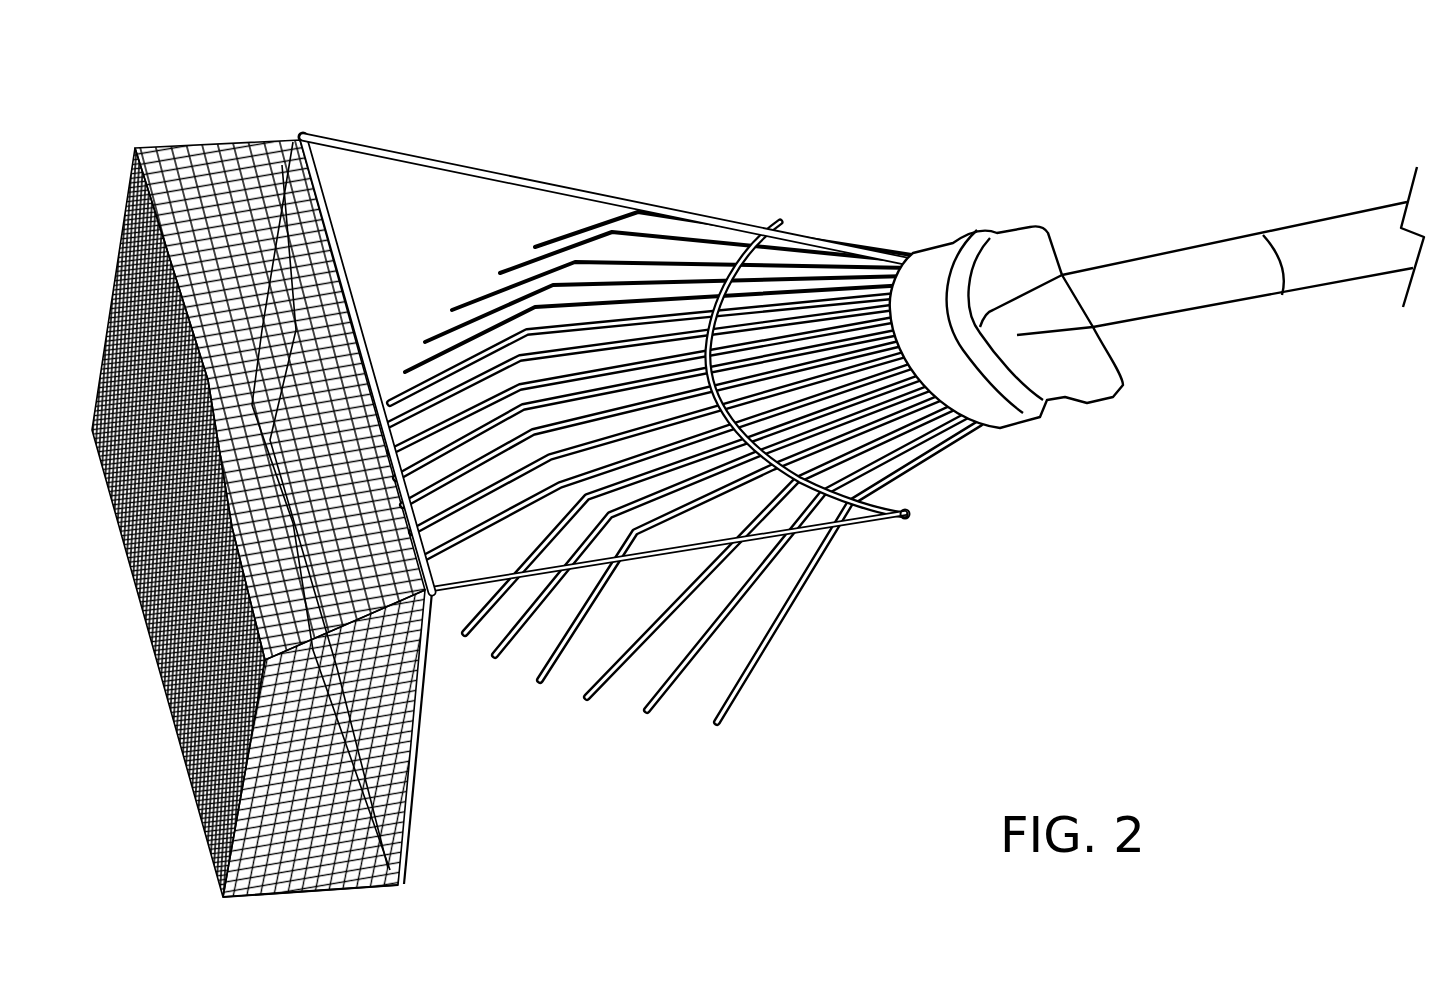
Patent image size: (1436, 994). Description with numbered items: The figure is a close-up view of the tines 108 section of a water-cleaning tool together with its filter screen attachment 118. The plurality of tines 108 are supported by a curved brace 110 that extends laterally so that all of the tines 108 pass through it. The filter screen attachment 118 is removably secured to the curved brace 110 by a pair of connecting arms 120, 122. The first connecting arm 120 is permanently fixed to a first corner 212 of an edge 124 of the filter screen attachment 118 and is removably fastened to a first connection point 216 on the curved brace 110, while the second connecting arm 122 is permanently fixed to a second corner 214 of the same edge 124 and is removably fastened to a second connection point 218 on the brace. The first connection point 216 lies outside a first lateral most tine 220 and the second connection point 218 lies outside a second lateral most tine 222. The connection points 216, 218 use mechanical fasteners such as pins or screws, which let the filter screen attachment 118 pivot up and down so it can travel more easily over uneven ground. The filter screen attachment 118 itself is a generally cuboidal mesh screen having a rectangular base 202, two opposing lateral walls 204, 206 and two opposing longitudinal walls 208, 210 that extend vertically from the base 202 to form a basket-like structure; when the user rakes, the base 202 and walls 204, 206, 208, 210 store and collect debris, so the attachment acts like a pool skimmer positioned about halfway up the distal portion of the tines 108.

The tines 108 is at (913, 256).
The curved brace 110 is at (893, 482).
The filter screen attachment 118 is at (348, 476).
The first connecting arm 120 is at (497, 178).
The second connecting arm 122 is at (757, 537).
The edge 124 is at (330, 240).
The rectangular base 202 is at (207, 453).
The lateral wall 204 is at (333, 757).
The lateral wall 206 is at (135, 205).
The longitudinal wall 208 is at (221, 190).
The longitudinal wall 210 is at (298, 797).
The first corner 212 is at (308, 130).
The second corner 214 is at (436, 602).
The first connection point 216 is at (780, 222).
The second connection point 218 is at (908, 519).
The first lateral most tine 220 is at (863, 401).
The second lateral most tine 222 is at (900, 546).